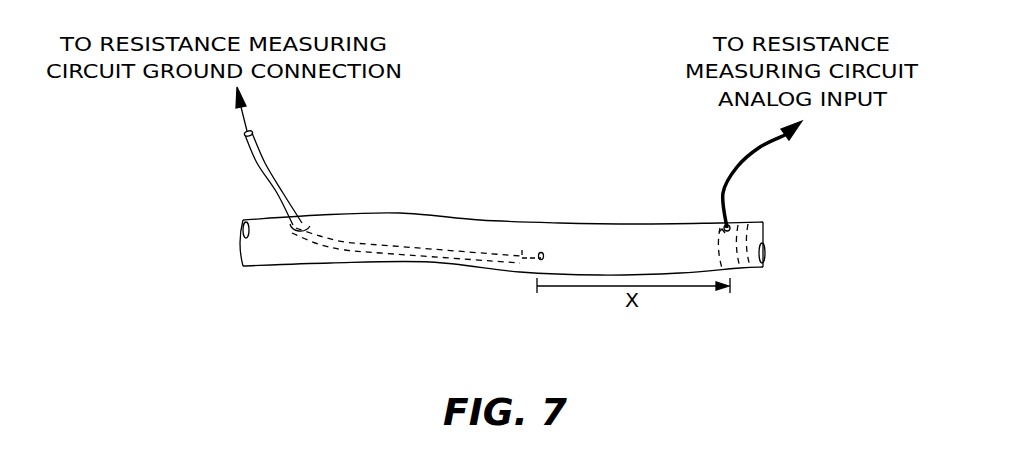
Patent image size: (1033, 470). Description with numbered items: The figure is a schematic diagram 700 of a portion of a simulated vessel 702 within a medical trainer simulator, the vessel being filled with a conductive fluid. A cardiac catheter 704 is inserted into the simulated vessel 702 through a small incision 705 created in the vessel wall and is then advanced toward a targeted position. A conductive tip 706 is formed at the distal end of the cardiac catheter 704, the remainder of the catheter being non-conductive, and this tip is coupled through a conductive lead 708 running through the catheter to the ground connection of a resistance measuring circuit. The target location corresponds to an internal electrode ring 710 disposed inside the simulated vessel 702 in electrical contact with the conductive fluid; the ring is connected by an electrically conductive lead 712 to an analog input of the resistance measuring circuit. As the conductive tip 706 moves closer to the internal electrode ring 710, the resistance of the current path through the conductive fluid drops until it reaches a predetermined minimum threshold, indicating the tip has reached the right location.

The schematic diagram 700 is at (308, 332).
The simulated vessel 702 is at (410, 215).
The cardiac catheter 704 is at (258, 176).
The small incision 705 is at (305, 223).
The conductive tip 706 is at (533, 250).
The conductive lead 708 is at (250, 112).
The internal electrode ring 710 is at (722, 226).
The electrically conductive lead 712 is at (727, 176).